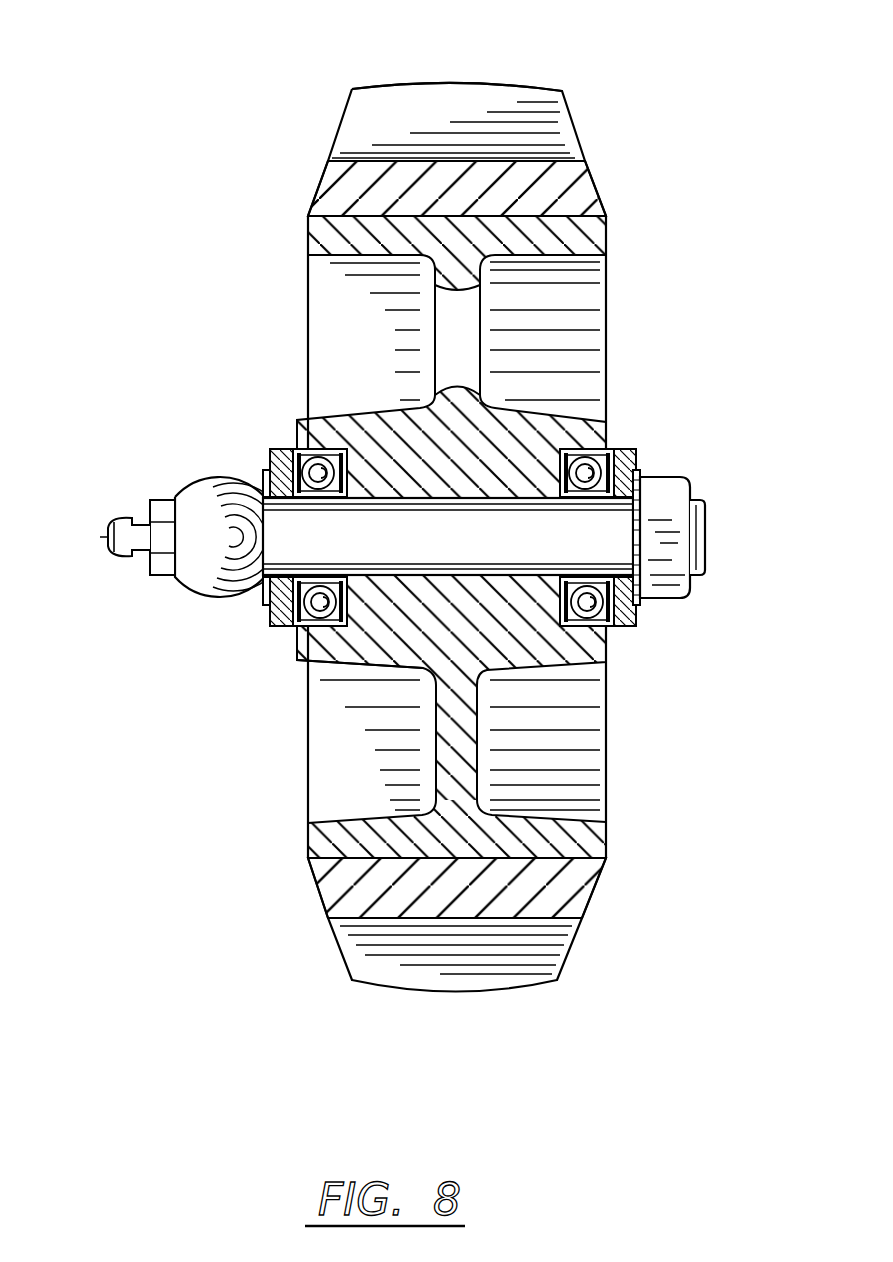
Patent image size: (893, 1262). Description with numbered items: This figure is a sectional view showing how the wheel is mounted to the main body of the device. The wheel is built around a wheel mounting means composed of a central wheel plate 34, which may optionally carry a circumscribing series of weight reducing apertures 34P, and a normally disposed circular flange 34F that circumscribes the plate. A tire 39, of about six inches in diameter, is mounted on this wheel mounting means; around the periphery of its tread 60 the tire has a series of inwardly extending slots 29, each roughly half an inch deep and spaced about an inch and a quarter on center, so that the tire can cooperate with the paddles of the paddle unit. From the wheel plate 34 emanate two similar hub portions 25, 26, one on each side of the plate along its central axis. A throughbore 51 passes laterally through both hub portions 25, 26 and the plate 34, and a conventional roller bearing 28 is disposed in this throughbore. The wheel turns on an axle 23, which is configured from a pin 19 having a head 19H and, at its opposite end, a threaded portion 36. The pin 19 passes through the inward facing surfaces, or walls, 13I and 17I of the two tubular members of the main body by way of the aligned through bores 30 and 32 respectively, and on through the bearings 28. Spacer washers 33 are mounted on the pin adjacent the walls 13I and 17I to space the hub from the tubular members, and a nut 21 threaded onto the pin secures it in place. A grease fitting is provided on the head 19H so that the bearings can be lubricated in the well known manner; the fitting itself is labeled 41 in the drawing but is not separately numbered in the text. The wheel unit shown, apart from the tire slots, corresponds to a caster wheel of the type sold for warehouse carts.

The tread 60 is at (436, 82).
The tire 39 is at (573, 113).
The slots 29 is at (362, 123).
The circular flange 34F is at (590, 229).
The weight reducing apertures 34P is at (470, 338).
The wheel plate 34 is at (470, 746).
The hub portion 26 is at (565, 432).
The roller bearing 28 is at (605, 440).
The spacer washer 33 is at (626, 490).
The inward facing surface 13I is at (292, 457).
The inward facing surface 17I is at (628, 628).
The hub portion 25 is at (313, 448).
The through bore 30 is at (275, 626).
The throughbore 51 is at (357, 633).
The axle 23 is at (582, 548).
The nut 21 is at (668, 485).
The threaded portion 36 is at (700, 500).
The through bore 32 is at (636, 627).
The grease fitting 41 is at (112, 537).
The head 19H is at (180, 582).
The pin 19 is at (161, 587).